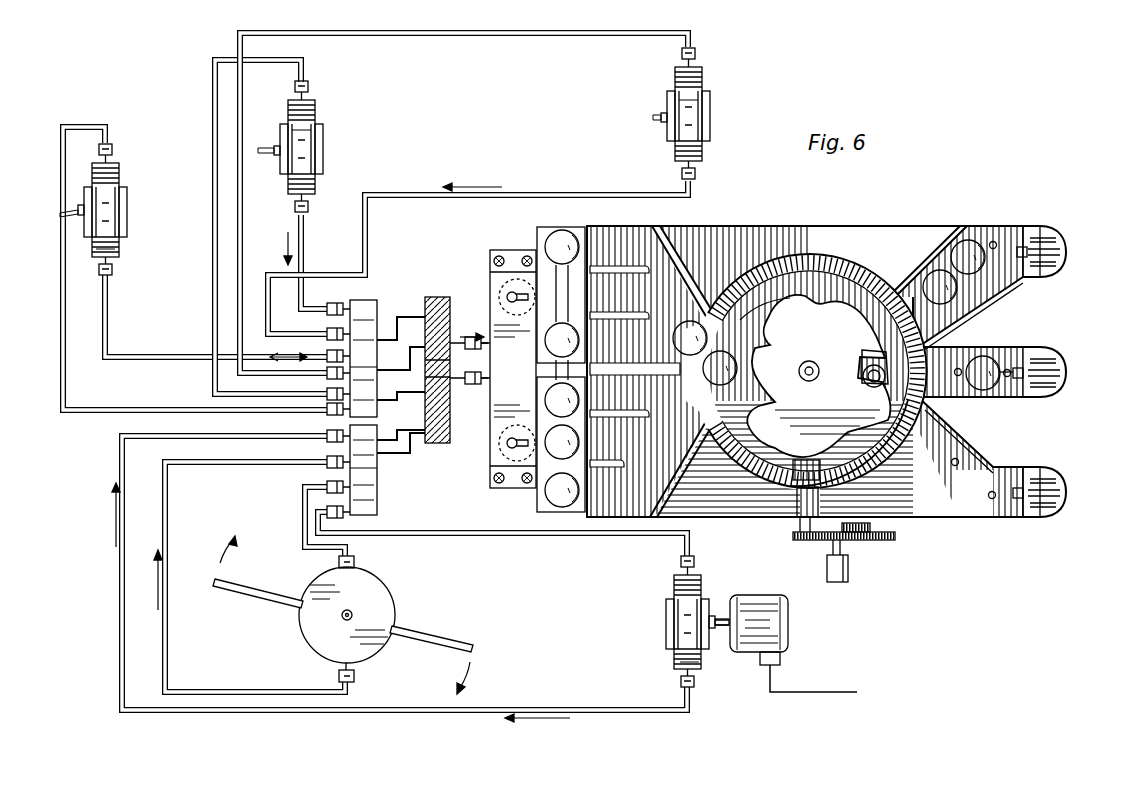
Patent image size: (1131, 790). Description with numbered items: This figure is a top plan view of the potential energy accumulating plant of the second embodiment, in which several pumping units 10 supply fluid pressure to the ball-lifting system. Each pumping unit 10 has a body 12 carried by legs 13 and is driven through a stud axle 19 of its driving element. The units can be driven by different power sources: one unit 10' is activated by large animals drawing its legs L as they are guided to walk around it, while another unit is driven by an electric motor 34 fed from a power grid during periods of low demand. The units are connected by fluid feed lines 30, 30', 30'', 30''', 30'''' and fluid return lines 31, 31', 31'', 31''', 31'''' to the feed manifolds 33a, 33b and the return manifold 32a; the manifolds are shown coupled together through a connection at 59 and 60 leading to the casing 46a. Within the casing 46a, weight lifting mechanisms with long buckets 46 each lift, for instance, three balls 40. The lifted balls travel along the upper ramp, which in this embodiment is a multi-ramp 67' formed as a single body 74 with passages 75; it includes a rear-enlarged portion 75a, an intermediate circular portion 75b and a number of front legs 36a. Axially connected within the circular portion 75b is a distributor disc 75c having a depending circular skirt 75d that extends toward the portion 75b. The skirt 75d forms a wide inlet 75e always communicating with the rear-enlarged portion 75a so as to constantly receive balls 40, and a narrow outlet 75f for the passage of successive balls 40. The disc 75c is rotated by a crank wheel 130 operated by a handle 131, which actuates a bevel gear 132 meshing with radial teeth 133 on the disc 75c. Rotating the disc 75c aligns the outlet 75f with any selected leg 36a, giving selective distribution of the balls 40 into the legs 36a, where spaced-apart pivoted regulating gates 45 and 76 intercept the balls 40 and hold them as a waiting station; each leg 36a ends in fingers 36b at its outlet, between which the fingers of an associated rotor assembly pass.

The pumping unit 10 is at (430, 357).
The animal-driven pumping unit 10' is at (305, 619).
The body 12 is at (107, 248).
The legs 13 is at (673, 137).
The stud axle 19 is at (267, 147).
The fluid feed line 30 is at (502, 553).
The fluid feed line 30' is at (195, 240).
The fluid feed line 30'' is at (310, 224).
The fluid feed line 30''' is at (464, 203).
The fluid feed line 30'''' is at (291, 523).
The fluid return line 31 is at (370, 573).
The fluid return line 31' is at (216, 338).
The fluid return line 31'' is at (237, 265).
The fluid return line 31''' is at (417, 261).
The fluid return line 31'''' is at (192, 577).
The return manifold 32a is at (343, 417).
The feed manifold 33a is at (370, 310).
The feed manifold 33b is at (438, 300).
The electric motor 34 is at (772, 618).
The front leg 36a is at (998, 237).
The fingers 36b is at (1063, 240).
The balls 40 is at (555, 490).
The regulating gate 45 is at (957, 460).
The bucket 46 is at (576, 277).
The casing 46a is at (500, 290).
The connector fitting 59 is at (457, 340).
The coupling 60 is at (435, 447).
The multi-ramp 67' is at (809, 333).
The manifold body 74 is at (645, 421).
The passage 75 is at (613, 443).
The rear-enlarged portion 75a is at (623, 290).
The intermediate circular portion 75b is at (707, 320).
The distributor disc 75c is at (777, 420).
The circular skirt 75d is at (783, 263).
The wide inlet 75e is at (758, 297).
The narrow outlet 75f is at (913, 400).
The regulating gate 76 is at (1010, 387).
The crank wheel 130 is at (887, 540).
The handle 131 is at (848, 567).
The bevel gear 132 is at (800, 467).
The radial teeth 133 is at (777, 452).
The legs L is at (245, 592).